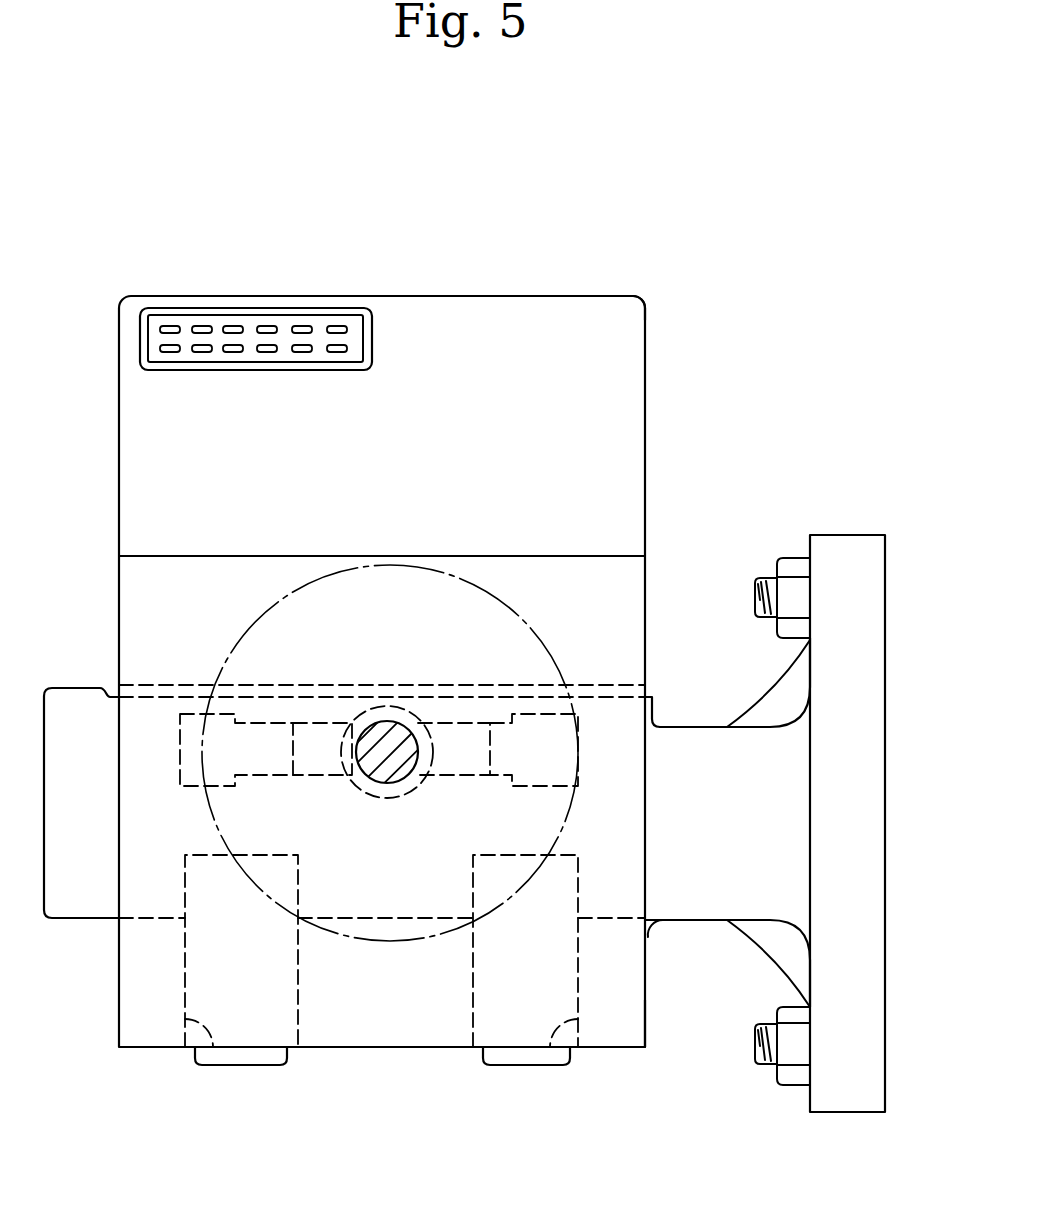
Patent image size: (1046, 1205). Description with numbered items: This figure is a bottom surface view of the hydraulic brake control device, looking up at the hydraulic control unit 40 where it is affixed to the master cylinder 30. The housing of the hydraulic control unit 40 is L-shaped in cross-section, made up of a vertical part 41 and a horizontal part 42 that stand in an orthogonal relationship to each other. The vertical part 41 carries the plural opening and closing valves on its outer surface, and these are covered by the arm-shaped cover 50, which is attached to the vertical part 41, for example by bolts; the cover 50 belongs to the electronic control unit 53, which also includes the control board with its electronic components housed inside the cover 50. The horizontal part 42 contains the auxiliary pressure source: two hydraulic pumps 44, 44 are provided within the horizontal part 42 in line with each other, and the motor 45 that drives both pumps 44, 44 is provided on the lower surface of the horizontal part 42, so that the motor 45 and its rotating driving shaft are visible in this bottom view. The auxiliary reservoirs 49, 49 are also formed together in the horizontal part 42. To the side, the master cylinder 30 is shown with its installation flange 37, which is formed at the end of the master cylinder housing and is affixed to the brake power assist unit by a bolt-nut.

The master cylinder 30 is at (695, 718).
The installation flange 37 is at (880, 805).
The hydraulic control unit 40 is at (648, 582).
The vertical part 41 is at (128, 613).
The horizontal part 42 is at (630, 1048).
The hydraulic pump 44 is at (331, 777).
The motor 45 is at (395, 722).
The auxiliary reservoir 49 is at (213, 1047).
The cover 50 is at (637, 368).
The electronic control unit 53 is at (638, 292).